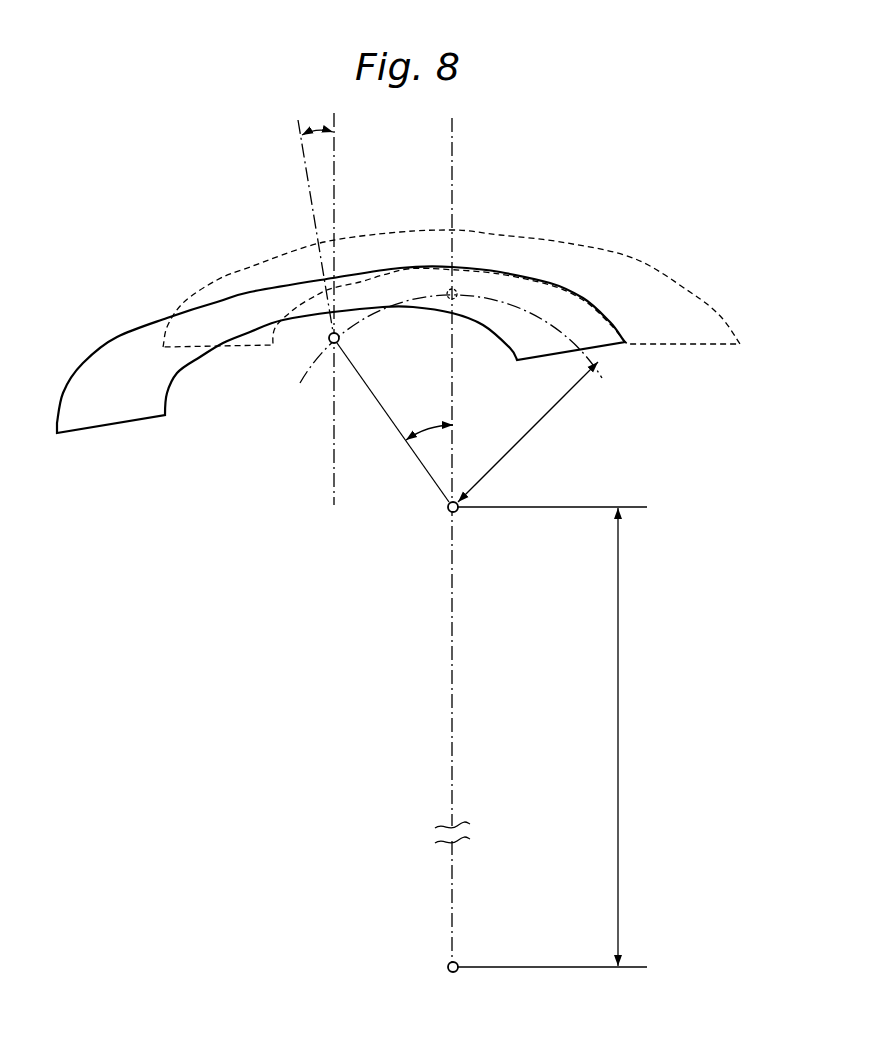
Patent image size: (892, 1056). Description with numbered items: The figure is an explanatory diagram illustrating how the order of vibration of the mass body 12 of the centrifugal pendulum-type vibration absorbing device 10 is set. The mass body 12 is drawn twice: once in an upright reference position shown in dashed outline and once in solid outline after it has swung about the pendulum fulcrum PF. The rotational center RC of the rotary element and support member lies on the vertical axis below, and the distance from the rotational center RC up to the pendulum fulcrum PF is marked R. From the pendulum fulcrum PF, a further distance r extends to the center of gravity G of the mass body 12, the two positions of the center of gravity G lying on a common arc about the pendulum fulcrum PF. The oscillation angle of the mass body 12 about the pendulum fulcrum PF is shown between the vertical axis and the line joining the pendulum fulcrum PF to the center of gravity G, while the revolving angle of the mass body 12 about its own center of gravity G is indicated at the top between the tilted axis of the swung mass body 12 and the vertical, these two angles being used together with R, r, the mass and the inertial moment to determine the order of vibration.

The centrifugal pendulum-type vibration absorbing device 10 is at (400, 285).
The mass body 12 is at (79, 375).
The center of gravity G is at (330, 342).
The pendulum fulcrum PF is at (447, 507).
The rotational center RC is at (447, 967).
The distance from rotational center to pendulum fulcrum R is at (552, 737).
The distance from pendulum fulcrum to center of gravity r is at (528, 432).